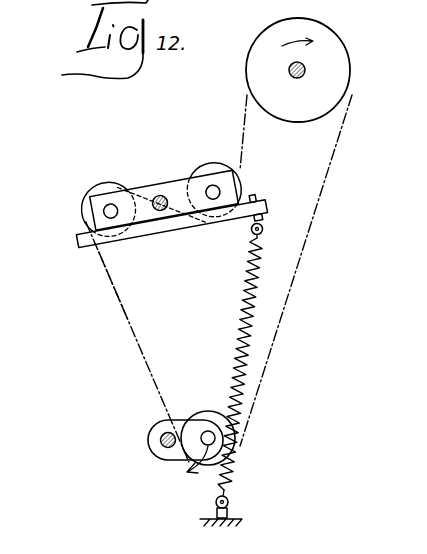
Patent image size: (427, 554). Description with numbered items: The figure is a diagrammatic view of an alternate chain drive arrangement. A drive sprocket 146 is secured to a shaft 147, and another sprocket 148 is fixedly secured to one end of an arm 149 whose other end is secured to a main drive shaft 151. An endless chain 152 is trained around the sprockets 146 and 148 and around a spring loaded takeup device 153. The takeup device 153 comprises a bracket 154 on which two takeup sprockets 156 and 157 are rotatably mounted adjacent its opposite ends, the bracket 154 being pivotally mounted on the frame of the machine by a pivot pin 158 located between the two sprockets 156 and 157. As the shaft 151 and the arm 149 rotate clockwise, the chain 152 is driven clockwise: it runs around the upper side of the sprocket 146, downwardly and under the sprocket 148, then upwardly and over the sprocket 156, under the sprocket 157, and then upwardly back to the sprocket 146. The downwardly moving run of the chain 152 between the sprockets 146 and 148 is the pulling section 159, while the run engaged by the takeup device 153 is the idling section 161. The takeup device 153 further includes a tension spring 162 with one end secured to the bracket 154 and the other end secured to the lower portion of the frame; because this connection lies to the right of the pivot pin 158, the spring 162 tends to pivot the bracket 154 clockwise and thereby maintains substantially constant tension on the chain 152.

The drive sprocket 146 is at (263, 70).
The shaft 147 is at (301, 66).
The sprocket 148 is at (206, 467).
The arm 149 is at (158, 452).
The main drive shaft 151 is at (161, 437).
The endless chain 152 is at (124, 333).
The spring loaded takeup device 153 is at (135, 194).
The bracket 154 is at (77, 243).
The takeup sprocket 156 is at (82, 205).
The takeup sprocket 157 is at (210, 164).
The pivot pin 158 is at (149, 179).
The pulling section 159 is at (314, 246).
The idling section 161 is at (119, 292).
The tension spring 162 is at (246, 352).